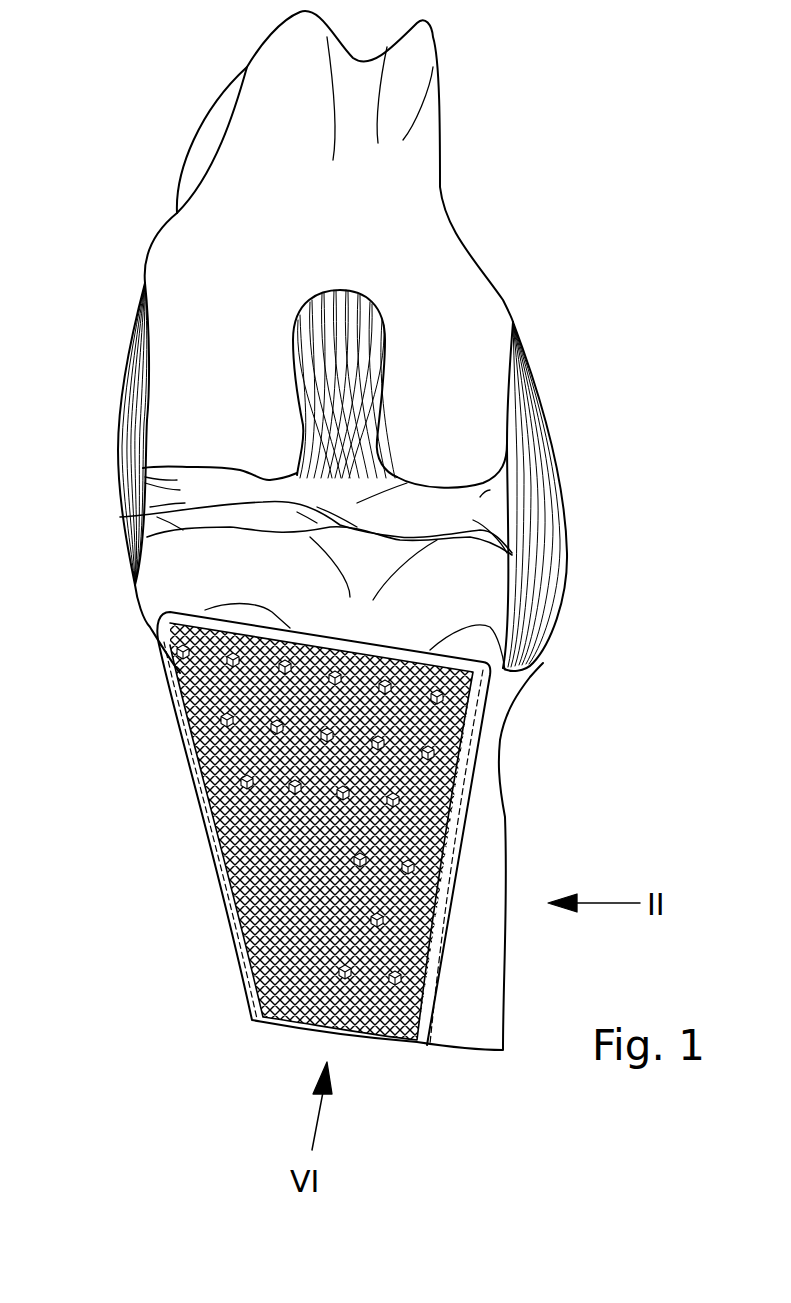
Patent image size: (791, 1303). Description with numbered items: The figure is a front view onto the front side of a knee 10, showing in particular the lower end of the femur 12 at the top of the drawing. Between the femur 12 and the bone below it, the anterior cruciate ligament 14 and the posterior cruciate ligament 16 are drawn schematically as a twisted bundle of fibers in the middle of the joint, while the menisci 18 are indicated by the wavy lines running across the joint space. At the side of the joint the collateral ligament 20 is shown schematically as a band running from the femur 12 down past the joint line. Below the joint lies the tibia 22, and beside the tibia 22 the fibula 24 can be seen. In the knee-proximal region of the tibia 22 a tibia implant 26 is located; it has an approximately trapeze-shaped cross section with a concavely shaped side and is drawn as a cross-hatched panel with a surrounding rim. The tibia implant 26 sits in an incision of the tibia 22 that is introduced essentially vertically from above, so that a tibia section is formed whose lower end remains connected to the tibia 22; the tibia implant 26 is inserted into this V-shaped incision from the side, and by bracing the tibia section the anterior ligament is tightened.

The knee 10 is at (110, 434).
The femur 12 is at (353, 175).
The anterior cruciate ligament 14 is at (343, 443).
The posterior cruciate ligament 16 is at (322, 347).
The menisci 18 is at (120, 517).
The collateral ligament 20 is at (528, 593).
The tibia 22 is at (430, 603).
The fibula 24 is at (482, 852).
The tibia implant 26 is at (290, 858).